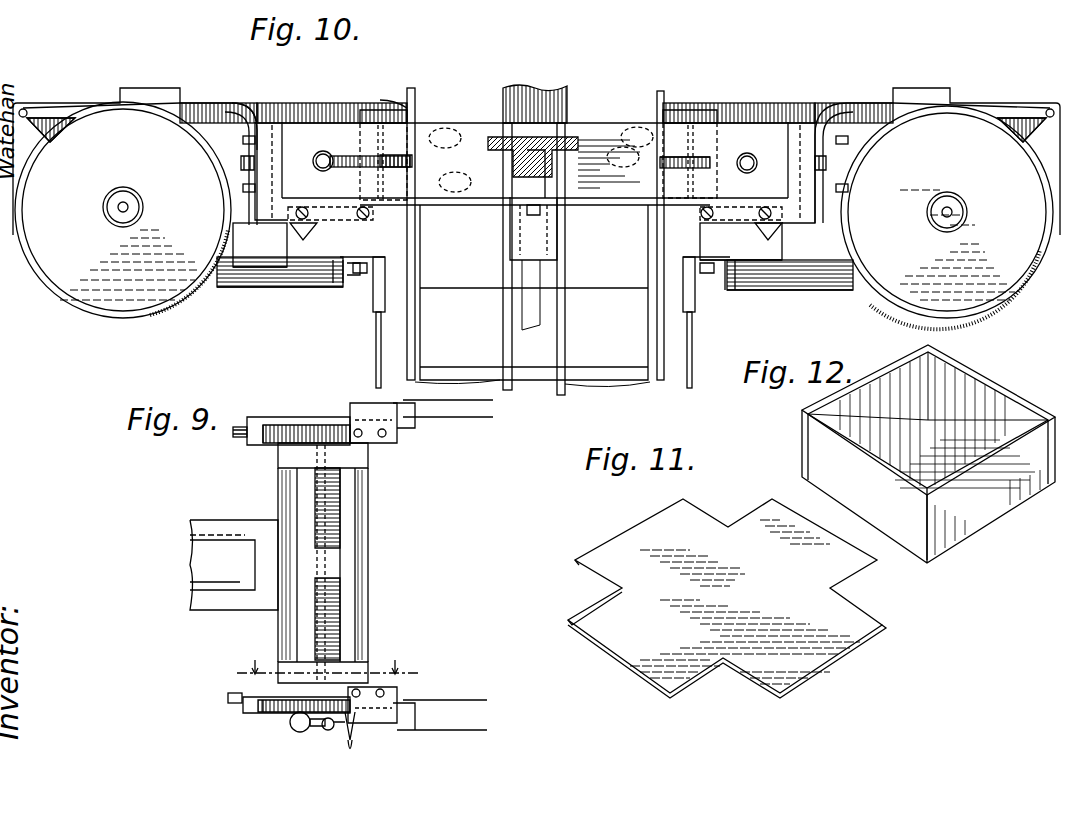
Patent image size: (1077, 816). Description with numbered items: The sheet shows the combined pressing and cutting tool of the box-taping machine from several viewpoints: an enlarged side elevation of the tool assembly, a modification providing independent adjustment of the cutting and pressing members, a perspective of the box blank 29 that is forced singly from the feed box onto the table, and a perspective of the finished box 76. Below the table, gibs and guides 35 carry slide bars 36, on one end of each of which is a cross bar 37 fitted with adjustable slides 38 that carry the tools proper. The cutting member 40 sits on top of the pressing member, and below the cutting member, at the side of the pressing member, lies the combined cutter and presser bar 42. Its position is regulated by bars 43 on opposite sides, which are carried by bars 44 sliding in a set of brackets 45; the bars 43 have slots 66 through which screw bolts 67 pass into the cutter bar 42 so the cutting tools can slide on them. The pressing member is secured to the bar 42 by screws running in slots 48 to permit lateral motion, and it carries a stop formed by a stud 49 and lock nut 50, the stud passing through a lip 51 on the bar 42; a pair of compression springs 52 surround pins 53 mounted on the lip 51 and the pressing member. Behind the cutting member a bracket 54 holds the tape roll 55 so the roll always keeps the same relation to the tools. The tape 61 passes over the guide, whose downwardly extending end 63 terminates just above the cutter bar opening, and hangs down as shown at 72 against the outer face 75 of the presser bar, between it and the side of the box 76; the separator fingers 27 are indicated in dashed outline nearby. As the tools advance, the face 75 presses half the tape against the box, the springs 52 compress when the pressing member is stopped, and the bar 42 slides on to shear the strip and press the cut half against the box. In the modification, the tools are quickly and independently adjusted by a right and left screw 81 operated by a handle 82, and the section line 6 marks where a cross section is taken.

In FIG. 9, the section line 6- 6 is at (318, 670).
In FIG. 10, the separator fingers 27 is at (541, 137).
In FIG. 11, the box blank 29 is at (633, 549).
In FIG. 10, the gibs and guides 35 is at (260, 268).
In FIG. 9, the gibs and guides 35 is at (222, 530).
In FIG. 10, the slide bars 36 is at (302, 273).
In FIG. 9, the slide bars 36 is at (210, 565).
In FIG. 10, the cross bar 37 is at (340, 233).
In FIG. 9, the cross bar 37 is at (350, 481).
In FIG. 10, the adjustable slides 38 is at (303, 223).
In FIG. 9, the adjustable slides 38 is at (350, 456).
In FIG. 10, the cutting member 40 is at (375, 113).
In FIG. 9, the cutting member 40 is at (365, 415).
In FIG. 10, the combined cutter and presser bar 42 is at (843, 143).
In FIG. 9, the combined cutter and presser bar 42 is at (307, 423).
In FIG. 10, the bars 43 is at (617, 140).
In FIG. 10, the bars 44 is at (553, 148).
In FIG. 10, the brackets 45 is at (487, 143).
In FIG. 10, the slots 48 is at (277, 142).
In FIG. 10, the stud 49 is at (256, 162).
In FIG. 10, the lock nut 50 is at (256, 166).
In FIG. 9, the lip 51 is at (252, 440).
In FIG. 9, the compression springs 52 is at (290, 437).
In FIG. 10, the pins 53 is at (243, 188).
In FIG. 9, the pins 53 is at (245, 437).
In FIG. 10, the bracket 54 is at (207, 130).
In FIG. 10, the tape roll 55 is at (173, 273).
In FIG. 10, the tape 61 is at (809, 157).
In FIG. 10, the downwardly extending end of guide 63 is at (413, 105).
In FIG. 10, the slots 66 is at (412, 161).
In FIG. 10, the screw bolts 67 is at (540, 152).
In FIG. 10, the hanging tape portion 72 is at (539, 169).
In FIG. 9, the outer face of presser bar 75 is at (400, 430).
In FIG. 10, the box 76 is at (473, 183).
In FIG. 9, the right and left screw 81 is at (337, 615).
In FIG. 9, the handle 82 is at (328, 730).